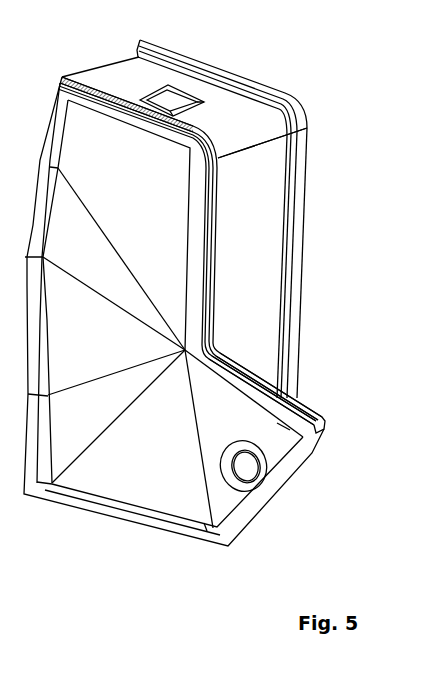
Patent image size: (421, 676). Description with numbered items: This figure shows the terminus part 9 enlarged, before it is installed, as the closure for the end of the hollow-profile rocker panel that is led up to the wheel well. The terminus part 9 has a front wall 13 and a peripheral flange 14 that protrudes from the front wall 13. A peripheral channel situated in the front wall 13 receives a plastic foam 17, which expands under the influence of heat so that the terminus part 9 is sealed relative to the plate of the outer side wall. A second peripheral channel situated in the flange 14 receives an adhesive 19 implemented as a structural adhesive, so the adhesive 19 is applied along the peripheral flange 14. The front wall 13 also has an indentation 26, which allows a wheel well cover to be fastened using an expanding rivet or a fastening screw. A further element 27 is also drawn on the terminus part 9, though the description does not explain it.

The terminus part 9 is at (257, 66).
The front wall 13 is at (177, 490).
The peripheral flange 14 is at (263, 228).
The plastic foam 17 is at (63, 77).
The adhesive 19 is at (297, 316).
The indentation 26 is at (248, 466).
The flange 27 is at (277, 423).